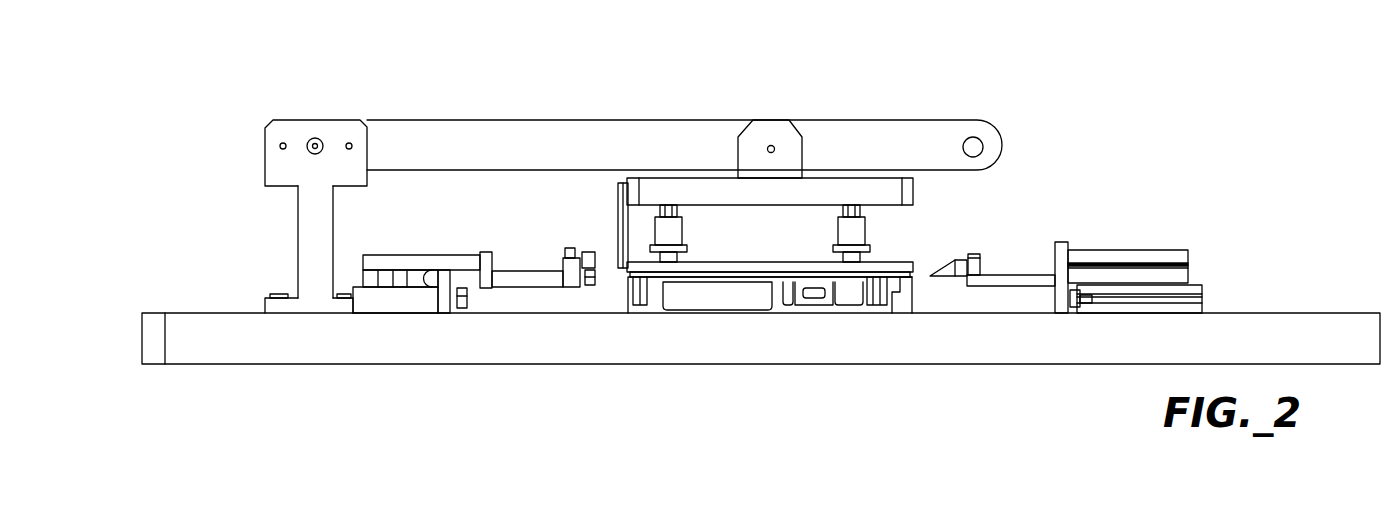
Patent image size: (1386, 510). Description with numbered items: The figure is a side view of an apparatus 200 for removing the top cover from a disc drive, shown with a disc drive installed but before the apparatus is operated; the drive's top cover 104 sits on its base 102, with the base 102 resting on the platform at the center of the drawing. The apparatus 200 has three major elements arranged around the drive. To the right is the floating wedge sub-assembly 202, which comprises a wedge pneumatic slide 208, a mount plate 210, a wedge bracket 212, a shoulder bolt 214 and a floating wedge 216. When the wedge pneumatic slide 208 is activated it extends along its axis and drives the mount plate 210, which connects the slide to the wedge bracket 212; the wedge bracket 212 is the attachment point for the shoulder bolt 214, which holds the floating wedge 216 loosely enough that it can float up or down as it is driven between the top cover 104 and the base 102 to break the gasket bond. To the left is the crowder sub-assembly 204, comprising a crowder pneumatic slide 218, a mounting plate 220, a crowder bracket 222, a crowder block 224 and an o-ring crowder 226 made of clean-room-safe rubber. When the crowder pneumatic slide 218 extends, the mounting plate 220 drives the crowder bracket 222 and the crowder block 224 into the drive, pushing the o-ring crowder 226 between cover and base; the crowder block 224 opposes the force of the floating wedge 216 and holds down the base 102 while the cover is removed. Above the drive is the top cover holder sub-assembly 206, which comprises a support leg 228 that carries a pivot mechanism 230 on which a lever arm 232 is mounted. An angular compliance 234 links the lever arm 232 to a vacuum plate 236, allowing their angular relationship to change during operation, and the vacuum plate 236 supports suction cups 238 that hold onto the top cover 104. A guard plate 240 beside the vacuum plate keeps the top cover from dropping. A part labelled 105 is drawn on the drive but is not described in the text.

The apparatus 200 is at (245, 90).
The floating wedge sub-assembly 202 is at (1213, 291).
The crowder sub-assembly 204 is at (350, 271).
The top cover holder sub-assembly 206 is at (651, 108).
The wedge pneumatic slide 208 is at (1178, 280).
The mount plate 210 is at (1100, 248).
The wedge bracket 212 is at (1035, 273).
The shoulder bolt 214 is at (975, 258).
The floating wedge 216 is at (953, 270).
The crowder pneumatic slide 218 is at (382, 303).
The mounting plate 220 is at (423, 262).
The crowder bracket 222 is at (516, 280).
The crowder block 224 is at (572, 255).
The o-ring crowder 226 is at (600, 270).
The support leg 228 is at (305, 233).
The pivot mechanism 230 is at (273, 168).
The lever arm 232 is at (415, 122).
The angular compliance 234 is at (762, 127).
The vacuum plate 236 is at (828, 188).
The suction cup 238 is at (858, 233).
The guard plate 240 is at (623, 227).
The base 102 is at (700, 297).
The top cover 104 is at (713, 258).
The carrier latch 105 is at (917, 275).